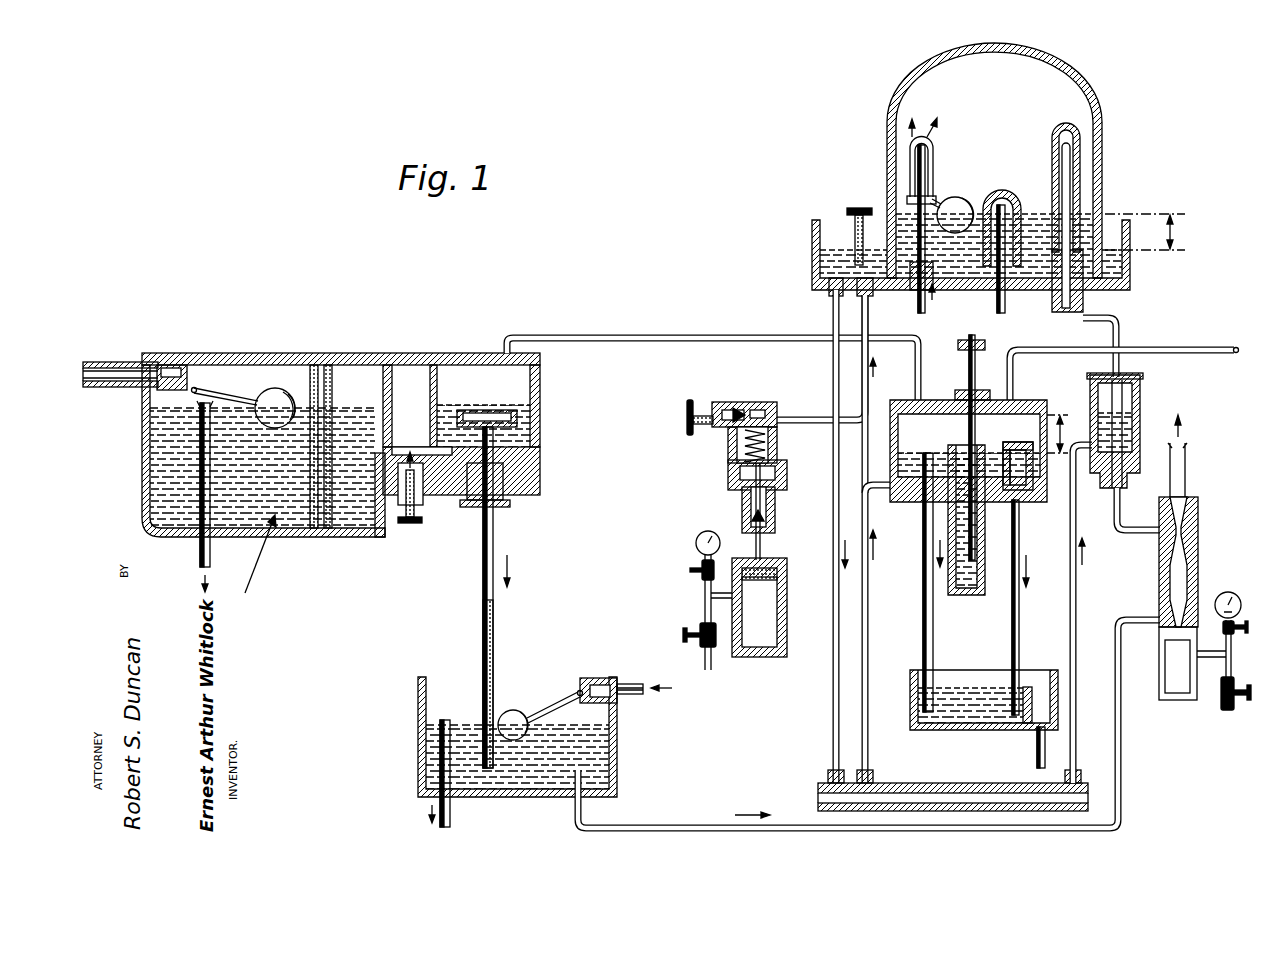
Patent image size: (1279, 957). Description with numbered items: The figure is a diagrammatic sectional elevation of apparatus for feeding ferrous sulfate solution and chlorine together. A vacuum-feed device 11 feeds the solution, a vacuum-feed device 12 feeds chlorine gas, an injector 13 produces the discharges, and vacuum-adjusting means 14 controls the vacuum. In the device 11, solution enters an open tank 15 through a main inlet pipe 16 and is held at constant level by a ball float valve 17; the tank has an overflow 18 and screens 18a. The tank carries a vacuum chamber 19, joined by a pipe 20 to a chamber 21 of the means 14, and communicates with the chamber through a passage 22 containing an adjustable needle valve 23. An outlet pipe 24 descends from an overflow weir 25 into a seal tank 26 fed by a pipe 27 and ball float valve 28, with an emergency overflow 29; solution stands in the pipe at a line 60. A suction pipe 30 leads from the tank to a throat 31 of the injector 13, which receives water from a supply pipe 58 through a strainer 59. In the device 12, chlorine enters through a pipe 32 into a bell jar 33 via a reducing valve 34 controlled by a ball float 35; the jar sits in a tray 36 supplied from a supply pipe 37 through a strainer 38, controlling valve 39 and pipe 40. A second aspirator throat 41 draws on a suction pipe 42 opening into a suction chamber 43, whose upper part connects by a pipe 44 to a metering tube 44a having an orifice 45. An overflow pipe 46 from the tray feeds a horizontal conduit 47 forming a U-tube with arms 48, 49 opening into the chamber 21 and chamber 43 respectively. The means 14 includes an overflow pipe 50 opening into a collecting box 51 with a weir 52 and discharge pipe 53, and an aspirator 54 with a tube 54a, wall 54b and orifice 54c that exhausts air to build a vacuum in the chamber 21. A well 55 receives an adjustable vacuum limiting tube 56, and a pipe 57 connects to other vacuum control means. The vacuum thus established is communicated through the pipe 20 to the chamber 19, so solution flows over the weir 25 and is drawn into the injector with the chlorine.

The vacuum-feed device 11 is at (197, 350).
The vacuum-feed device 12 is at (876, 181).
The injector 13 is at (1202, 560).
The vacuum-adjusting means 14 is at (1052, 500).
The open tank 15 is at (142, 483).
The main inlet pipe 16 is at (108, 362).
The ball float valve 17 is at (222, 390).
The overflow 18 is at (200, 556).
The screens 18a is at (328, 365).
The vacuum chamber 19 is at (540, 392).
The pipe 20 is at (690, 337).
The chamber 21 is at (890, 430).
The passage 22 is at (451, 486).
The adjustable needle valve 23 is at (420, 508).
The outlet pipe 24 is at (494, 548).
The overflow weir 25 is at (517, 420).
The tank 26 is at (418, 708).
The pipe 27 is at (626, 680).
The ball float valve 28 is at (560, 702).
The emergency overflow 29 is at (440, 764).
The suction pipe 30 is at (705, 827).
The throat 31 is at (1200, 630).
The pipe 32 is at (914, 292).
The bell jar 33 is at (1077, 90).
The reducing valve 34 is at (934, 167).
The ball float 35 is at (960, 198).
The tray 36 is at (812, 240).
The supply pipe 37 is at (713, 665).
The strainer 38 is at (768, 618).
The controlling valve 39 is at (777, 512).
The pipe 40 is at (805, 418).
The aspirator throat 41 is at (1198, 530).
The suction pipe 42 is at (1121, 535).
The suction chamber 43 is at (1130, 404).
The pipe 44 is at (1110, 316).
The metering tube 44a is at (1080, 165).
The orifice 45 is at (1035, 130).
The overflow pipe 46 is at (832, 680).
The horizontal conduit 47 is at (963, 783).
The arm 48 is at (875, 618).
The arm 49 is at (1078, 600).
The overflow pipe 50 is at (924, 652).
The collecting box 51 is at (965, 690).
The weir 52 is at (1032, 706).
The pipe 53 is at (1037, 746).
The aspirator 54 is at (1026, 492).
The tube 54a is at (1020, 650).
The wall 54b is at (1022, 442).
The orifice 54c is at (1006, 458).
The well 55 is at (986, 585).
The vacuum limiting tube 56 is at (968, 430).
The pipe 57 is at (1033, 350).
The supply pipe 58 is at (1223, 703).
The strainer 59 is at (1176, 700).
The line 60 is at (494, 640).